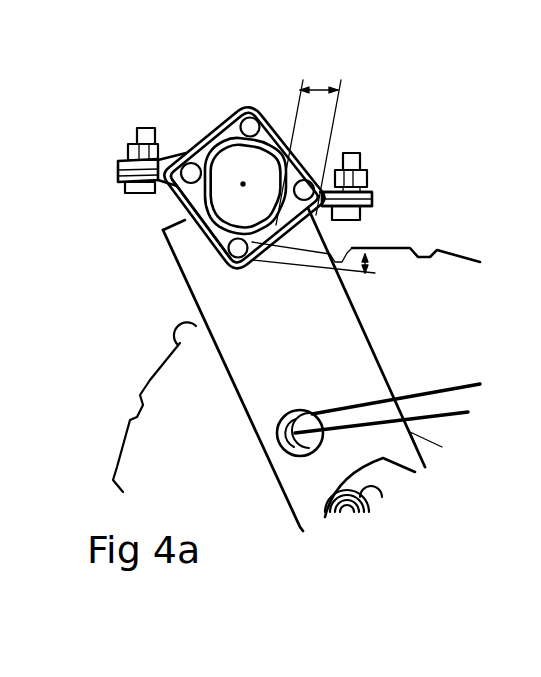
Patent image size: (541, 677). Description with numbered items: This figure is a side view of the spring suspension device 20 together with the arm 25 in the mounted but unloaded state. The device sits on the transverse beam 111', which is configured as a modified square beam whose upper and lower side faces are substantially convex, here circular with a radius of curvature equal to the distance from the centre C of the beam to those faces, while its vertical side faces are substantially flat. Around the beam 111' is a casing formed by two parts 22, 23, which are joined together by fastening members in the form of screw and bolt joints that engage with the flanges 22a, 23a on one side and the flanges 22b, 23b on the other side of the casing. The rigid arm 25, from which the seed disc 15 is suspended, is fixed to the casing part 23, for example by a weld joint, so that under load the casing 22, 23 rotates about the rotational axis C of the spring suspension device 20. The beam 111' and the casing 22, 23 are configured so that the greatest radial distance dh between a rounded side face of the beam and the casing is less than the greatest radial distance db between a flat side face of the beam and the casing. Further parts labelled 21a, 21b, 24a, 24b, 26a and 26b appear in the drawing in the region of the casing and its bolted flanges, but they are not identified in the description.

The spring suspension device 20 is at (363, 85).
The casing part 22 is at (212, 132).
The upper flange part 21a is at (251, 118).
The lower flange part 21b is at (232, 251).
The rotational axis C is at (243, 184).
The left bolt hole 24a is at (185, 173).
The right bolt hole 24b is at (300, 185).
The casing part 23 is at (175, 197).
The flange 22a is at (118, 162).
The flange 22b is at (372, 192).
The left bolt 26a is at (132, 147).
The right bolt 26b is at (352, 157).
The flange 23a is at (118, 178).
The flange 23b is at (362, 212).
The greatest radial distance between flat side face and casing db is at (315, 85).
The greatest radial distance between rounded side face and casing dh is at (372, 270).
The seed disc 15 is at (470, 273).
The transverse beam 111' is at (142, 250).
The arm 25 is at (205, 312).